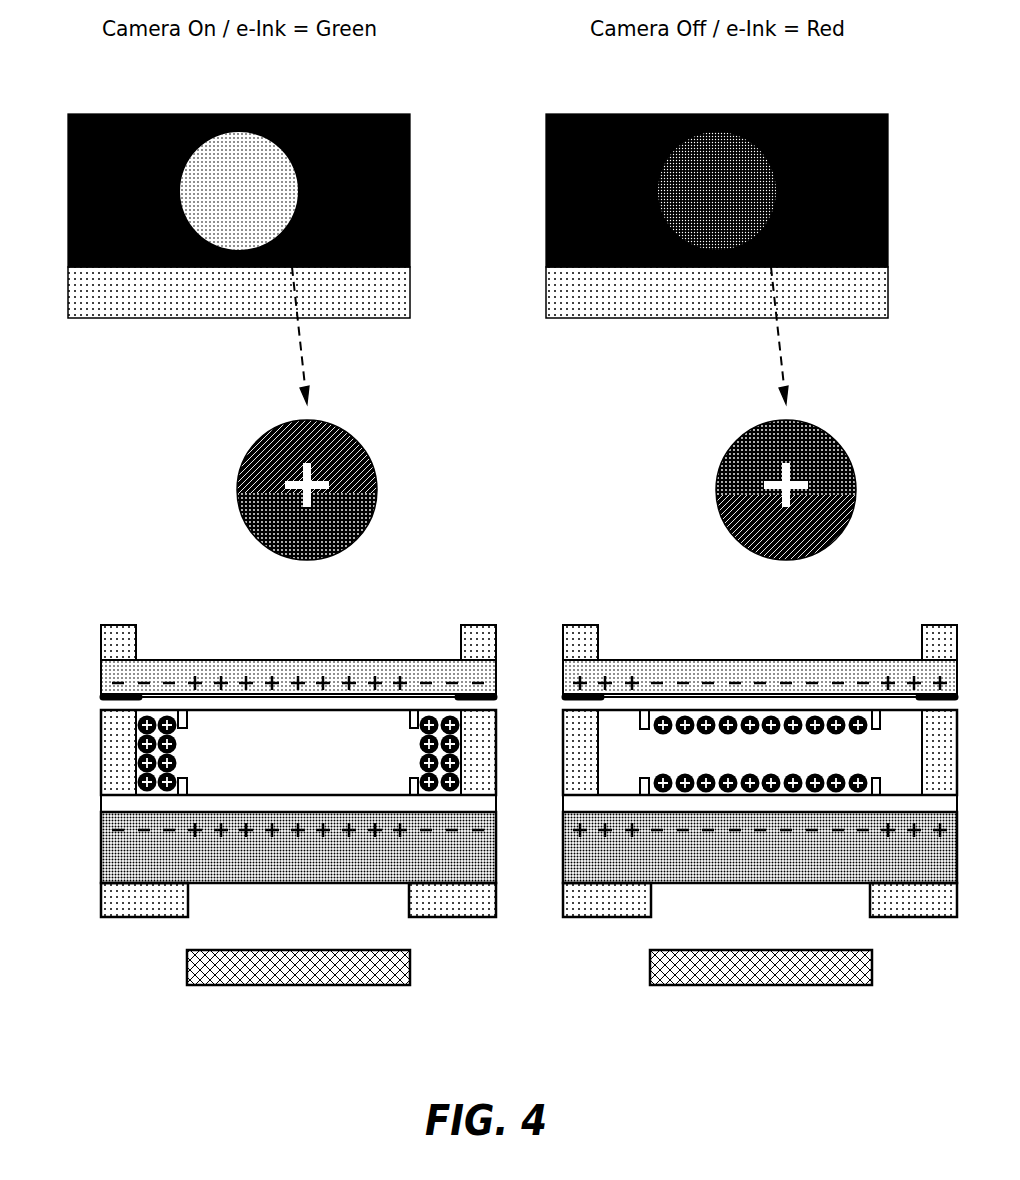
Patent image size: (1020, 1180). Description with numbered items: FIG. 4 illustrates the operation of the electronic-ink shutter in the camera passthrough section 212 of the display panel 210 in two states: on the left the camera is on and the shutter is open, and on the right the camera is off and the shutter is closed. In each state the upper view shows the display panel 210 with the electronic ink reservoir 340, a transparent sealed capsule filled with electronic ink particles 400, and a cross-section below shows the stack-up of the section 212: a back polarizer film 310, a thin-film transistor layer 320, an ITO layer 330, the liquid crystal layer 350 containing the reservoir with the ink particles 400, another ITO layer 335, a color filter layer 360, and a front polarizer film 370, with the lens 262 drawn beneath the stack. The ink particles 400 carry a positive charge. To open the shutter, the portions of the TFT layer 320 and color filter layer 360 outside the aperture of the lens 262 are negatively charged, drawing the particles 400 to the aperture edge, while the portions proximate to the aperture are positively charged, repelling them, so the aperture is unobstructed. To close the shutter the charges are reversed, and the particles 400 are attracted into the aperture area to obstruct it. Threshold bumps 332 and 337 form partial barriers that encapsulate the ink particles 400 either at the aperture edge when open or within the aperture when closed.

The display panel 210 is at (83, 113).
The camera passthrough section 212 is at (150, 113).
The electronic ink reservoir 340 is at (180, 193).
The electronic ink particles 400 is at (254, 444).
The front polarizer film 370 is at (101, 635).
The color filter layer 360 is at (101, 667).
The ITO layer 335 is at (101, 703).
The liquid crystal layer 350 is at (101, 753).
The threshold bump 337 is at (188, 727).
The threshold bump 332 is at (188, 781).
The ITO layer 330 is at (101, 803).
The thin-film transistor layer 320 is at (101, 839).
The back polarizer film 310 is at (101, 891).
The lens 262 is at (187, 968).